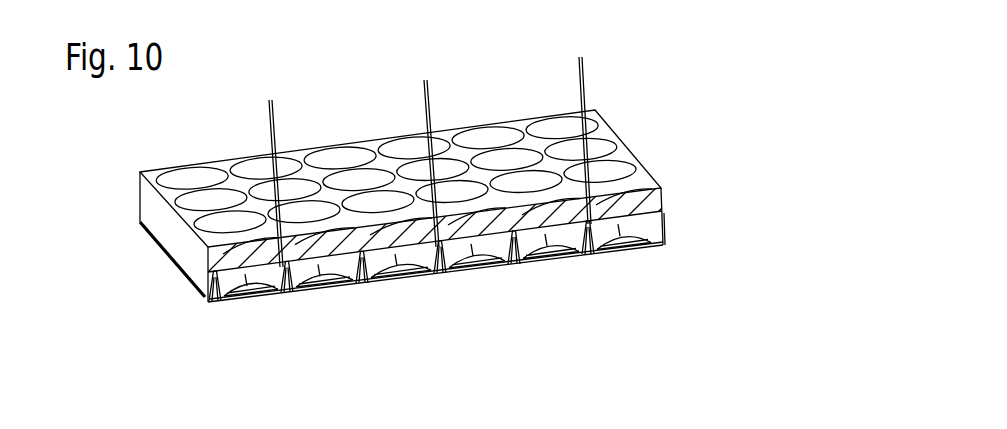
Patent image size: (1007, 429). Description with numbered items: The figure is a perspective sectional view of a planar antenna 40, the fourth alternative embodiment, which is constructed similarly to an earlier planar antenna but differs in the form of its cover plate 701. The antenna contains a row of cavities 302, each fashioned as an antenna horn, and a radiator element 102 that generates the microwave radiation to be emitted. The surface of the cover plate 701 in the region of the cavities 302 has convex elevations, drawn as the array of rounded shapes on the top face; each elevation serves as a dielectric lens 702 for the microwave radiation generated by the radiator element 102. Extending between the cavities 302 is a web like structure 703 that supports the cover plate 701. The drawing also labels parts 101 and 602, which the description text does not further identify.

The planar antenna 40 is at (160, 257).
The substrate 101 is at (236, 302).
The radiator element 102 is at (633, 250).
The cavities 302 is at (653, 250).
The pin / rod 602 is at (419, 147).
The cover plate 701 is at (630, 202).
The dielectric lens 702 is at (217, 221).
The web like structure 703 is at (667, 227).